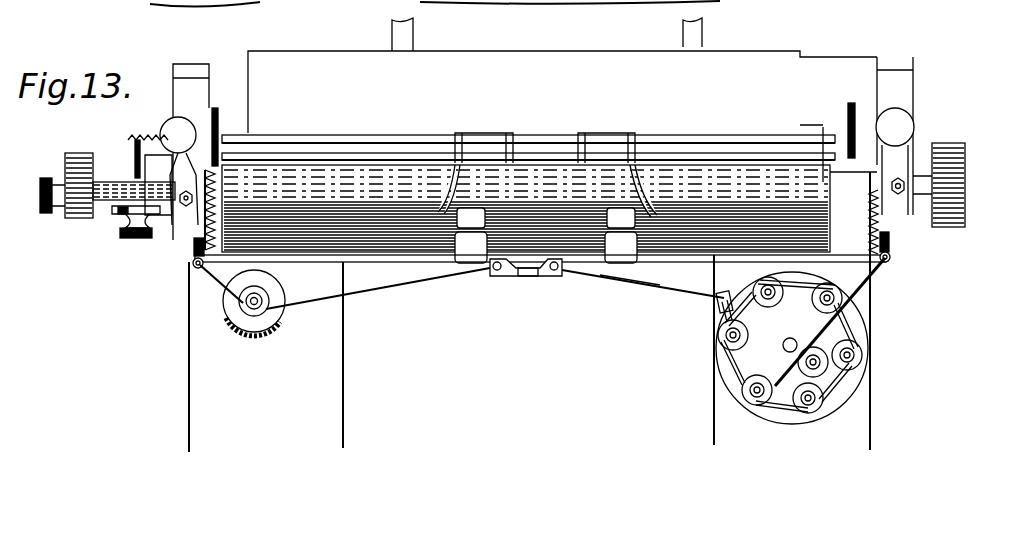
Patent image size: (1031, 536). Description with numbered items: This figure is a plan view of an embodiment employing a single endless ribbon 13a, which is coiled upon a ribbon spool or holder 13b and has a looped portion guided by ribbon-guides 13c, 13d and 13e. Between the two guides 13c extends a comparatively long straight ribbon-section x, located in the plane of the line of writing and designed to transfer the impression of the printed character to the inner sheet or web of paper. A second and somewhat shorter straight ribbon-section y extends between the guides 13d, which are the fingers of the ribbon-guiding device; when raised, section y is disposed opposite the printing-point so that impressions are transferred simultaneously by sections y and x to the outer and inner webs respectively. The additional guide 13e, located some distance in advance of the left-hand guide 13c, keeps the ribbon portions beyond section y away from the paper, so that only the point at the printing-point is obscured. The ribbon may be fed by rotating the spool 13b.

The endless ribbon 13a is at (879, 276).
The ribbon spool or holder 13b is at (725, 366).
The ribbon-guides 13c is at (197, 237).
The ribbon-guides 13d is at (493, 277).
The additional guide 13e is at (268, 300).
The straight ribbon-section x is at (637, 272).
The straight ribbon-section y is at (515, 276).